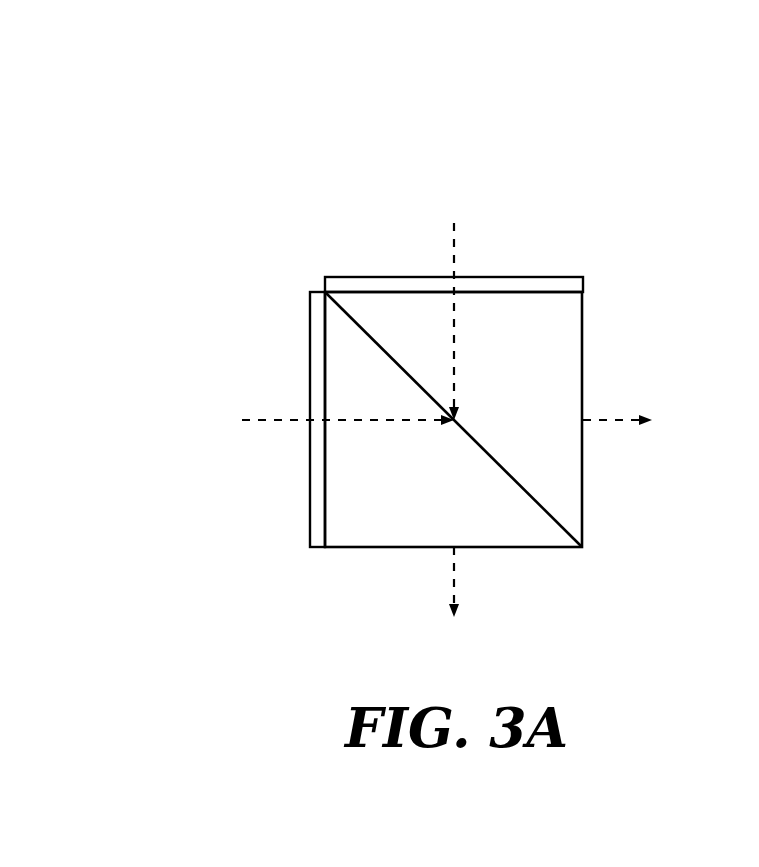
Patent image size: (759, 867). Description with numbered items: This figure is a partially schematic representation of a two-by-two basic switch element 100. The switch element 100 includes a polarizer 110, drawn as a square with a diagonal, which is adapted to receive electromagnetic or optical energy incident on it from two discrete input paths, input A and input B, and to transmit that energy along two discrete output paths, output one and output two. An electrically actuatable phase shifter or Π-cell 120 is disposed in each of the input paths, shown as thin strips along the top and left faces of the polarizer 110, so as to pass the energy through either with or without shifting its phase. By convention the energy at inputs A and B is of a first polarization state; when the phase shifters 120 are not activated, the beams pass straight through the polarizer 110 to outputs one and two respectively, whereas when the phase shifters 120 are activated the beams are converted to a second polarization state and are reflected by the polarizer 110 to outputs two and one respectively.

The 2×2 basic switch element 100 is at (454, 377).
The polarizer 110 is at (542, 509).
The phase shifter or Π-cell 120 is at (568, 283).